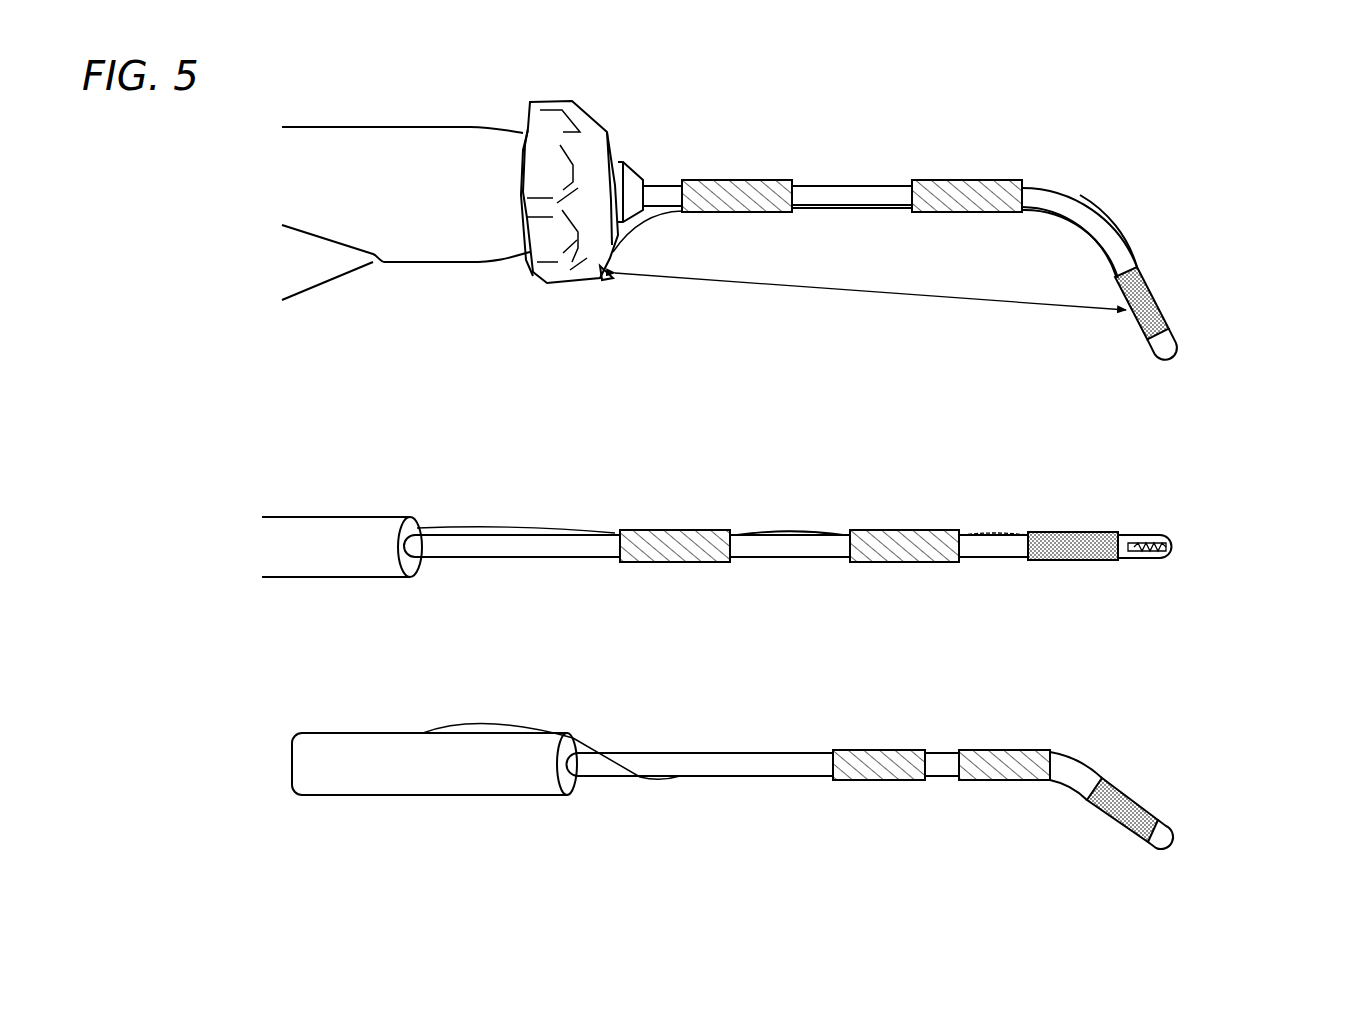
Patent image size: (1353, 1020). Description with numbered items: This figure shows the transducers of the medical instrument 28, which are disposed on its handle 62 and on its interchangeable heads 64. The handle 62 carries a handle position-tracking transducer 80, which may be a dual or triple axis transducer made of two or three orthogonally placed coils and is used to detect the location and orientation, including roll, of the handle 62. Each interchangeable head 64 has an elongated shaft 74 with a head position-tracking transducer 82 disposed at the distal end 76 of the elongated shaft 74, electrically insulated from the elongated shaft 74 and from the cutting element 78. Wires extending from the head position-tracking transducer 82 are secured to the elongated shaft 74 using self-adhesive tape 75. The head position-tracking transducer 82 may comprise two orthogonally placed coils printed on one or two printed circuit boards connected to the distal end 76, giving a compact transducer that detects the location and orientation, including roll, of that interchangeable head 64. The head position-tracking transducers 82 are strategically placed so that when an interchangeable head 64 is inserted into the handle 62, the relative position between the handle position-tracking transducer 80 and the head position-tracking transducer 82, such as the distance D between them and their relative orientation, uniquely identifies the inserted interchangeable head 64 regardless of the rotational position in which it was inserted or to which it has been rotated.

The medical instrument 28 is at (1280, 98).
The handle 62 is at (430, 126).
The interchangeable head 64 is at (862, 185).
The elongated shaft 74 is at (1068, 189).
The self-adhesive tape 75 is at (722, 179).
The distal end 76 is at (1128, 246).
The cutting element 78 is at (1152, 357).
The handle position-tracking transducer 80 is at (604, 290).
The head position-tracking transducer 82 is at (1162, 295).